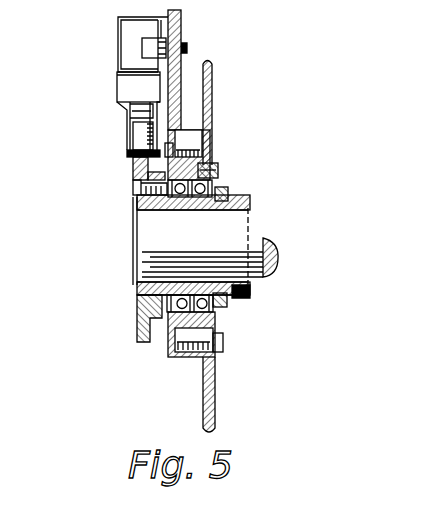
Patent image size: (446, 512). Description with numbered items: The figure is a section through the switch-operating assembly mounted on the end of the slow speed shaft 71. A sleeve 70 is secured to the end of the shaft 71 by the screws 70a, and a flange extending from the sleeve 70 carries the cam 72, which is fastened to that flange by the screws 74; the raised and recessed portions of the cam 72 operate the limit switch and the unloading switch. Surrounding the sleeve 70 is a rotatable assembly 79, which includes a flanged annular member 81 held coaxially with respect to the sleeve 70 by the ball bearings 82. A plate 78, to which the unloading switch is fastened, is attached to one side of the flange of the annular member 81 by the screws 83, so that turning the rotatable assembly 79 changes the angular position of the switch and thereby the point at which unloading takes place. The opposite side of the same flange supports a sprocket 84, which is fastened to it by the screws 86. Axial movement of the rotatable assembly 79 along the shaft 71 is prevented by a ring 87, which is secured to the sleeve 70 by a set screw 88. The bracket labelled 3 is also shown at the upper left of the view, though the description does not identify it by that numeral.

The bracket 3 is at (113, 82).
The plate 78 is at (186, 46).
The rotatable assembly 79 is at (228, 117).
The screws 83 is at (212, 100).
The flanged annular member 81 is at (208, 160).
The ball bearings 82 is at (216, 182).
The set screw 88 is at (230, 190).
The screws 70a is at (247, 197).
The slow speed shaft 71 is at (260, 228).
The screws 74 is at (133, 183).
The sleeve 70 is at (137, 288).
The cam 72 is at (137, 313).
The ring 87 is at (228, 302).
The screws 86 is at (223, 342).
The sprocket 84 is at (216, 370).